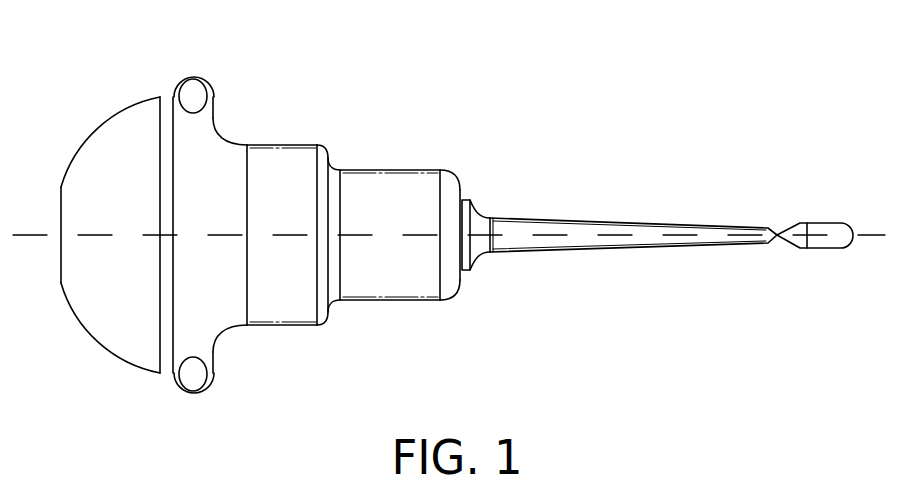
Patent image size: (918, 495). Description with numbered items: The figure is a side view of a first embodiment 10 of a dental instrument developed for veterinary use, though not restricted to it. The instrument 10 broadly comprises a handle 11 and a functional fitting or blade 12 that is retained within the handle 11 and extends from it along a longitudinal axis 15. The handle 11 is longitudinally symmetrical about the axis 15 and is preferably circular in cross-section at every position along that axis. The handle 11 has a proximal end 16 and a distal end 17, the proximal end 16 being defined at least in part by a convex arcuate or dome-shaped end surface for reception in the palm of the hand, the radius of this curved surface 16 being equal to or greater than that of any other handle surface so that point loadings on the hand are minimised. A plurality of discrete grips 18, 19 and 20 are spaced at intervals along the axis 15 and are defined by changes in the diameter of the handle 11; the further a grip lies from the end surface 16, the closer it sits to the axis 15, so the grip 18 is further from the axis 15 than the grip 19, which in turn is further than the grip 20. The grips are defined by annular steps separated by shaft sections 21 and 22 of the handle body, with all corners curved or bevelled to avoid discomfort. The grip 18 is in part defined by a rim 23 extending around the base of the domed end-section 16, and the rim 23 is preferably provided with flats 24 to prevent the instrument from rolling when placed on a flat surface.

The first embodiment of dental instrument 10 is at (105, 91).
The handle 11 is at (278, 230).
The functional fitting or blade 12 is at (671, 218).
The longitudinal axis 15 is at (666, 236).
The proximal end 16 is at (95, 325).
The distal end 17 is at (464, 274).
The grip 18 is at (231, 343).
The grip 19 is at (331, 162).
The grip 20 is at (462, 187).
The shaft section 21 is at (298, 313).
The shaft section 22 is at (401, 284).
The rim 23 is at (184, 332).
The flats 24 is at (193, 89).